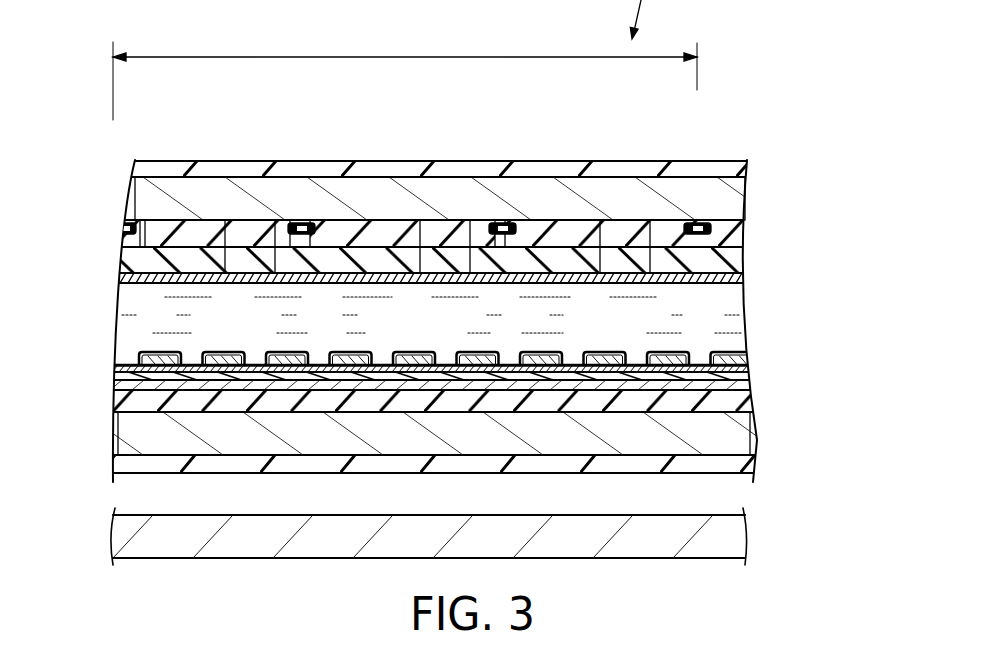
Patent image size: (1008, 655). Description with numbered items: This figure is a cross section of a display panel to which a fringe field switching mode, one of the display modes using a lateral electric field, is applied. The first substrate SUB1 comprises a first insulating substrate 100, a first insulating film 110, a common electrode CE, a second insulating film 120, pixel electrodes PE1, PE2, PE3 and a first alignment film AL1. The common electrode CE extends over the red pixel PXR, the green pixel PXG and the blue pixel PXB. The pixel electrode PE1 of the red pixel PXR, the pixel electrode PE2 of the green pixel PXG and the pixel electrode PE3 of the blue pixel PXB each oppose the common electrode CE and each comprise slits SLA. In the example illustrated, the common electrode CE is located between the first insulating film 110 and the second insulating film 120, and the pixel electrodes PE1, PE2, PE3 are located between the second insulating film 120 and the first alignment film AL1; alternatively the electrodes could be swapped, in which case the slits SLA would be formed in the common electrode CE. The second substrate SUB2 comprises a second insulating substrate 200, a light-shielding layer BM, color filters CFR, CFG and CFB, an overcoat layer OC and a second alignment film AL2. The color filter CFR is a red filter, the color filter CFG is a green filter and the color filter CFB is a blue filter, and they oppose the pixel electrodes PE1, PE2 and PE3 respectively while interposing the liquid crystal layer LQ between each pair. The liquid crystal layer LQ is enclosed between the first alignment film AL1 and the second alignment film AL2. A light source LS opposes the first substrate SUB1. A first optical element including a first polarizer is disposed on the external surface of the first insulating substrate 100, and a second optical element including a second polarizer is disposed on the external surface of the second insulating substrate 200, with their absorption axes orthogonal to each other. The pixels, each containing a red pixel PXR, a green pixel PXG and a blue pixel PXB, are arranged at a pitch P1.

The pitch P1 is at (405, 75).
The light-shielding layer BM is at (413, 228).
The color filter CFR is at (215, 233).
The color filter CFG is at (402, 233).
The color filter CFB is at (625, 233).
The red pixel PXR is at (248, 260).
The green pixel PXG is at (443, 260).
The blue pixel PXB is at (623, 260).
The second insulating substrate 200 is at (435, 198).
The overcoat layer OC is at (435, 260).
The second alignment film AL2 is at (435, 278).
The liquid crystal layer LQ is at (435, 324).
The slits SLA is at (165, 352).
The first alignment film AL1 is at (435, 368).
The second insulating film 120 is at (435, 376).
The common electrode CE is at (435, 385).
The first insulating film 110 is at (435, 401).
The first insulating substrate 100 is at (435, 433).
The pixel electrode PE1 is at (224, 358).
The pixel electrode PE2 is at (351, 358).
The pixel electrode PE3 is at (541, 358).
The second substrate SUB2 is at (747, 232).
The first substrate SUB1 is at (768, 436).
The light source LS is at (746, 538).